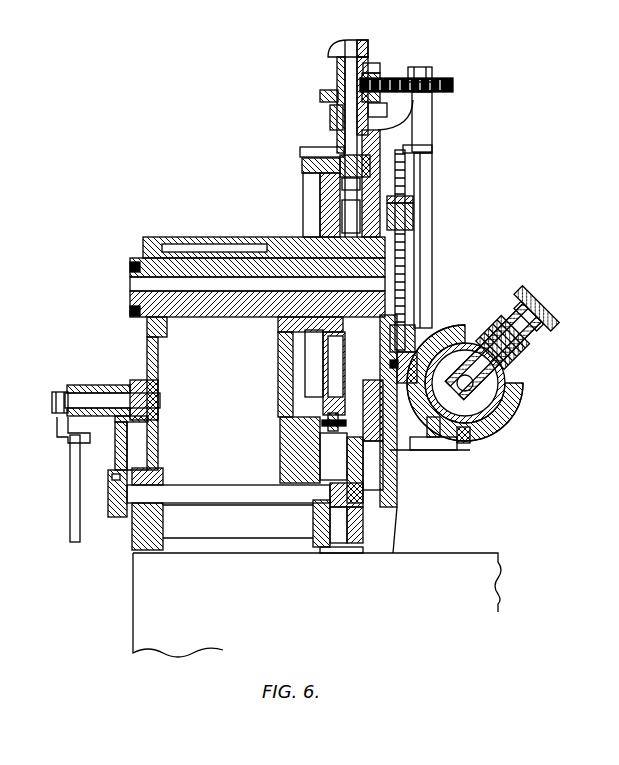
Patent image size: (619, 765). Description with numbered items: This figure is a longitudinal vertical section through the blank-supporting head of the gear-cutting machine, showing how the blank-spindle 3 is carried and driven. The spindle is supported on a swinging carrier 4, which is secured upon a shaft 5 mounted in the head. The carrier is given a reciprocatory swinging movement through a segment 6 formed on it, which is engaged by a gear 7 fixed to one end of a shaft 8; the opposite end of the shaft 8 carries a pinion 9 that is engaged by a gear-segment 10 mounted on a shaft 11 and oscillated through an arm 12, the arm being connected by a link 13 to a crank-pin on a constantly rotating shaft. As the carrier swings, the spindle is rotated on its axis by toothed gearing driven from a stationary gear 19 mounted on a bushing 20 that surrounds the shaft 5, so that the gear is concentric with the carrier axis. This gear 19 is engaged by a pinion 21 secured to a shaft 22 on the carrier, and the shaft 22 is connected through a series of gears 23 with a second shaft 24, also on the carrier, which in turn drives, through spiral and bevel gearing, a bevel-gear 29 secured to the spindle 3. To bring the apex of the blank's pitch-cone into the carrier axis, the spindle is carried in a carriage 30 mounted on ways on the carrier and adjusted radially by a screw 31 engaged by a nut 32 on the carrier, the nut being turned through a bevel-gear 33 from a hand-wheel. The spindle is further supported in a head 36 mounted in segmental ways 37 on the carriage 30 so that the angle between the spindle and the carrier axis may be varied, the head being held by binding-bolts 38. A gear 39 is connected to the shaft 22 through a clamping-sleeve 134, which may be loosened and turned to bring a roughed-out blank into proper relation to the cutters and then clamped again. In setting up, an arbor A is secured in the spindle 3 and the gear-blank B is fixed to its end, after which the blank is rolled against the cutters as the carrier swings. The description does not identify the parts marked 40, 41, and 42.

The blank-spindle 3 is at (465, 383).
The swinging carrier 4 is at (387, 478).
The shaft 5 is at (128, 268).
The segment 6 is at (353, 430).
The gear 7 is at (363, 530).
The shaft 8 is at (212, 492).
The pinion 9 is at (117, 513).
The gear-segment 10 is at (122, 464).
The shaft 11 is at (95, 398).
The arm 12 is at (60, 432).
The link 13 is at (70, 490).
The stationary gear 19 is at (304, 176).
The bushing 20 is at (240, 255).
The pinion 21 is at (342, 158).
The shaft 22 is at (336, 118).
The series of gears 23 is at (376, 70).
The second shaft 24 is at (427, 175).
The bevel-gear 29 is at (515, 370).
The carriage 30 is at (410, 452).
The screw 31 is at (408, 254).
The nut 32 is at (416, 218).
The bevel-gear 33 is at (416, 201).
The head 36 is at (498, 410).
The segmental ways 37 is at (463, 444).
The binding-bolts 38 is at (432, 440).
The gear 39 is at (322, 93).
The bolt 40 is at (453, 85).
The worm gear 41 is at (378, 78).
The cap 42 is at (340, 162).
The clamping-sleeve 134 is at (337, 70).
The arbor A is at (512, 345).
The gear-blank B is at (548, 310).